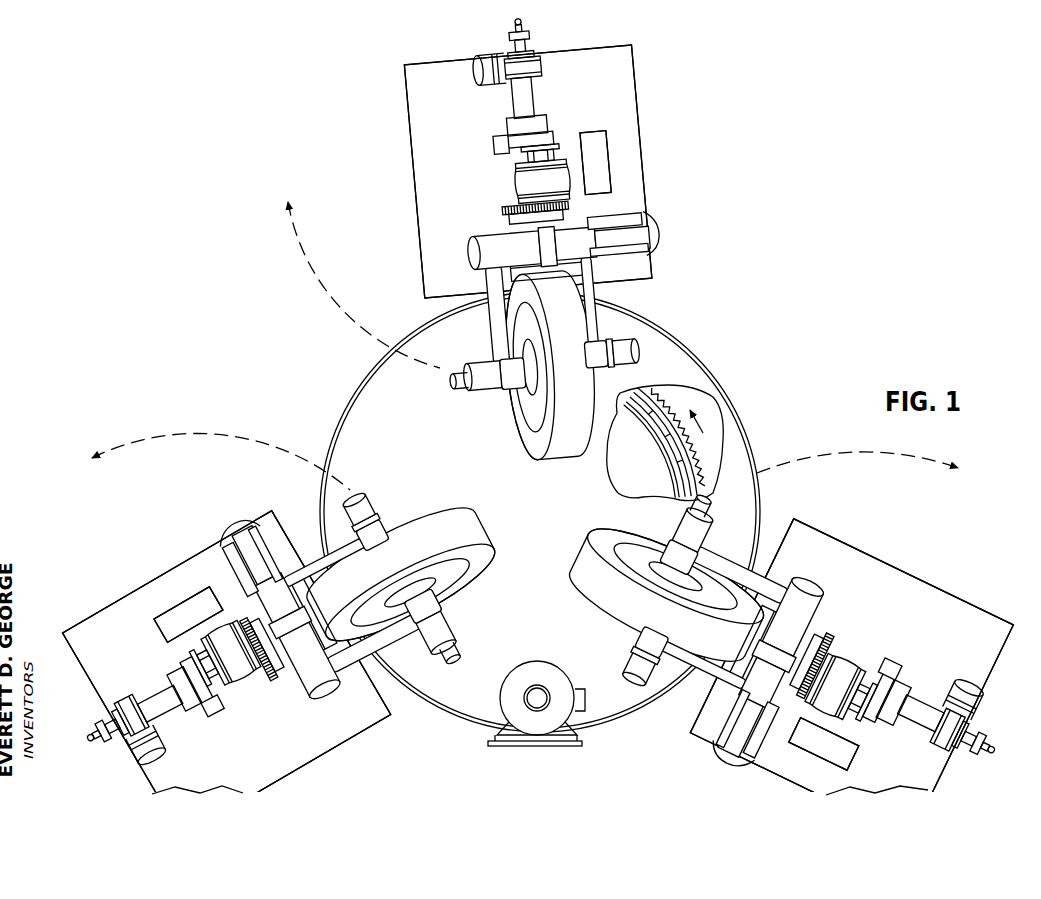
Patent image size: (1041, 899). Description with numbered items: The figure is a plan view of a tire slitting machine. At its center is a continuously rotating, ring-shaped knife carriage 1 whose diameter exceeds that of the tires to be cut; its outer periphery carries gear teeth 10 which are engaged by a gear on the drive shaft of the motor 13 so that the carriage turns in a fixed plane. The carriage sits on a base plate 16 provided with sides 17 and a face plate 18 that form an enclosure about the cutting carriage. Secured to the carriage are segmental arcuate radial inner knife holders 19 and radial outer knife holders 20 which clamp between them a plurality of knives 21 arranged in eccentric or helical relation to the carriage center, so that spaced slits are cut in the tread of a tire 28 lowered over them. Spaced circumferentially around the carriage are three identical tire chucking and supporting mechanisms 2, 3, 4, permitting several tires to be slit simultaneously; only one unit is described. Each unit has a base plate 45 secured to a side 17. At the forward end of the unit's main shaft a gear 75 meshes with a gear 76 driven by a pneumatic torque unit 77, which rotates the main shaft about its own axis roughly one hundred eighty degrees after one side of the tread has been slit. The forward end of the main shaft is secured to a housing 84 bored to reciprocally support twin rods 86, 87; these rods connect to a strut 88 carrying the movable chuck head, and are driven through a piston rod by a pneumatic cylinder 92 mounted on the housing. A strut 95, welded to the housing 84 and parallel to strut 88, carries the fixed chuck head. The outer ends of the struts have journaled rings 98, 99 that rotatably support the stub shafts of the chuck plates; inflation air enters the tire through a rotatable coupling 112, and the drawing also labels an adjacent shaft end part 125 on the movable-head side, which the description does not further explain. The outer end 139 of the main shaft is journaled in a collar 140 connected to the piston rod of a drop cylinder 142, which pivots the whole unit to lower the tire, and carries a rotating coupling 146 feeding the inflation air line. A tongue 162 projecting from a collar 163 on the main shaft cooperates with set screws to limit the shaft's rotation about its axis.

The knife carriage 1 is at (657, 452).
The tire chucking and supporting mechanism 2 is at (618, 106).
The tire chucking and supporting mechanism 3 is at (918, 608).
The tire chucking and supporting mechanism 4 is at (132, 616).
The gear teeth 10 is at (700, 449).
The motor 13 is at (508, 695).
The base plate 16 is at (627, 488).
The sides 17 is at (693, 354).
The face plate 18 is at (372, 392).
The radial inner knife holder 19 is at (658, 430).
The radial outer knife holder 20 is at (698, 470).
The knife 21 is at (650, 406).
The tire 28 is at (542, 458).
The base plate 45 is at (420, 181).
The gear 75 is at (505, 211).
The gear 76 is at (562, 207).
The pneumatic torque unit 77 is at (516, 188).
The housing 84 is at (560, 272).
The rod 86 is at (642, 258).
The rod 87 is at (613, 232).
The strut 88 is at (496, 332).
The pneumatic cylinder 92 is at (474, 244).
The strut 95 is at (592, 299).
The journaled ring 98 is at (506, 386).
The journaled ring 99 is at (591, 374).
The rotatable coupling 112 is at (620, 350).
The shaft end 125 is at (478, 366).
The outer end of main shaft 139 is at (518, 98).
The collar 140 is at (540, 68).
The drop cylinder 142 is at (492, 54).
The rotating coupling 146 is at (533, 54).
The tongue 162 is at (498, 138).
The collar 163 is at (540, 124).